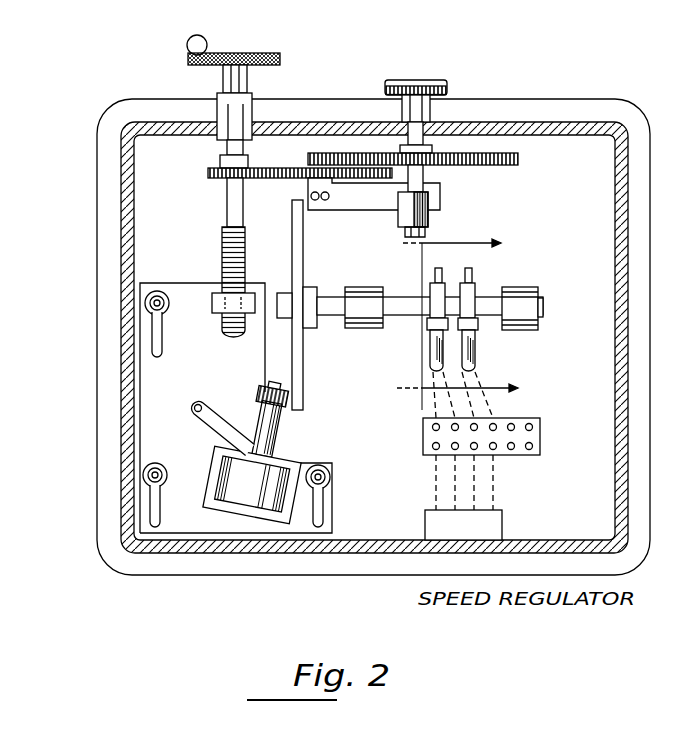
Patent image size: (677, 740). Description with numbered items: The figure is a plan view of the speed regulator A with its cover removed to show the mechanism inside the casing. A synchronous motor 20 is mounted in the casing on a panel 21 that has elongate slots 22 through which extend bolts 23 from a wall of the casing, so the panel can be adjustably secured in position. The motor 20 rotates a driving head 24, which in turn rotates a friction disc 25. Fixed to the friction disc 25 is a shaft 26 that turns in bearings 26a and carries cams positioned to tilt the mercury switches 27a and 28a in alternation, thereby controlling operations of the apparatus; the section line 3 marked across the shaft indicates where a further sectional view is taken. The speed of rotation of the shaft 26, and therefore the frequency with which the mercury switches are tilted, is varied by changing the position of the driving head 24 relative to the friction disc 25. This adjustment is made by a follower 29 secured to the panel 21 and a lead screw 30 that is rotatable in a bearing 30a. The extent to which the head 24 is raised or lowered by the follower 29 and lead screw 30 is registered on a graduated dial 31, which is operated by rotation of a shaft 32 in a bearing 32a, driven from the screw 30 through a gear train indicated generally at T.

The speed regulator A is at (637, 384).
The gear train T is at (300, 158).
The section line 3- 3 is at (457, 327).
The synchronous motor 20 is at (215, 478).
The panel 21 is at (205, 428).
The elongate slots 22 is at (152, 340).
The bolts 23 is at (145, 304).
The driving head 24 is at (282, 417).
The friction disc 25 is at (303, 397).
The shaft 26 is at (413, 309).
The bearings 26a is at (367, 328).
The mercury switch 27a is at (470, 290).
The mercury switch 28a is at (440, 290).
The follower 29 is at (212, 303).
The lead screw 30 is at (245, 271).
The bearing 30a is at (253, 108).
The graduated dial 31 is at (447, 80).
The shaft 32 is at (423, 138).
The bearing 32a is at (428, 213).